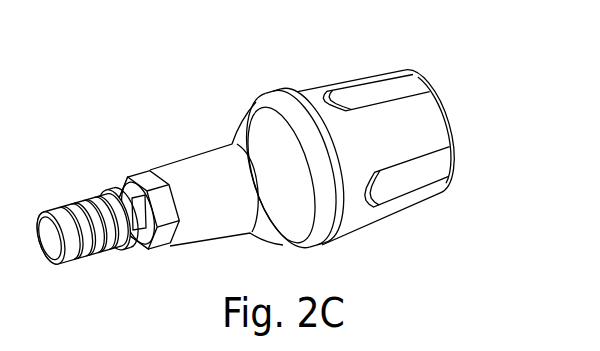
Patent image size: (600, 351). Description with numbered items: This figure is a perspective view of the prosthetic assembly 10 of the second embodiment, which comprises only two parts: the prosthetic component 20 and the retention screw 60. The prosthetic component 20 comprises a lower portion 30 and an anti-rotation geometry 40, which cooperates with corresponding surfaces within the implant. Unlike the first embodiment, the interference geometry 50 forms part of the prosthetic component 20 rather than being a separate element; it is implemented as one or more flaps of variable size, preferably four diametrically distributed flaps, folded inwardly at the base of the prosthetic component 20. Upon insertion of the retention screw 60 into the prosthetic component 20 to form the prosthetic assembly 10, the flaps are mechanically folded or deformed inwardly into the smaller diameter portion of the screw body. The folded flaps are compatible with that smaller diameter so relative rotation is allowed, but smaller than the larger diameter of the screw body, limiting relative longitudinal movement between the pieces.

The prosthetic assembly 10 is at (245, 164).
The prosthetic component 20 is at (347, 213).
The lower portion 30 is at (207, 172).
The anti-rotation geometry 40 is at (148, 178).
The interference geometry 50 is at (144, 252).
The retention screw 60 is at (65, 267).